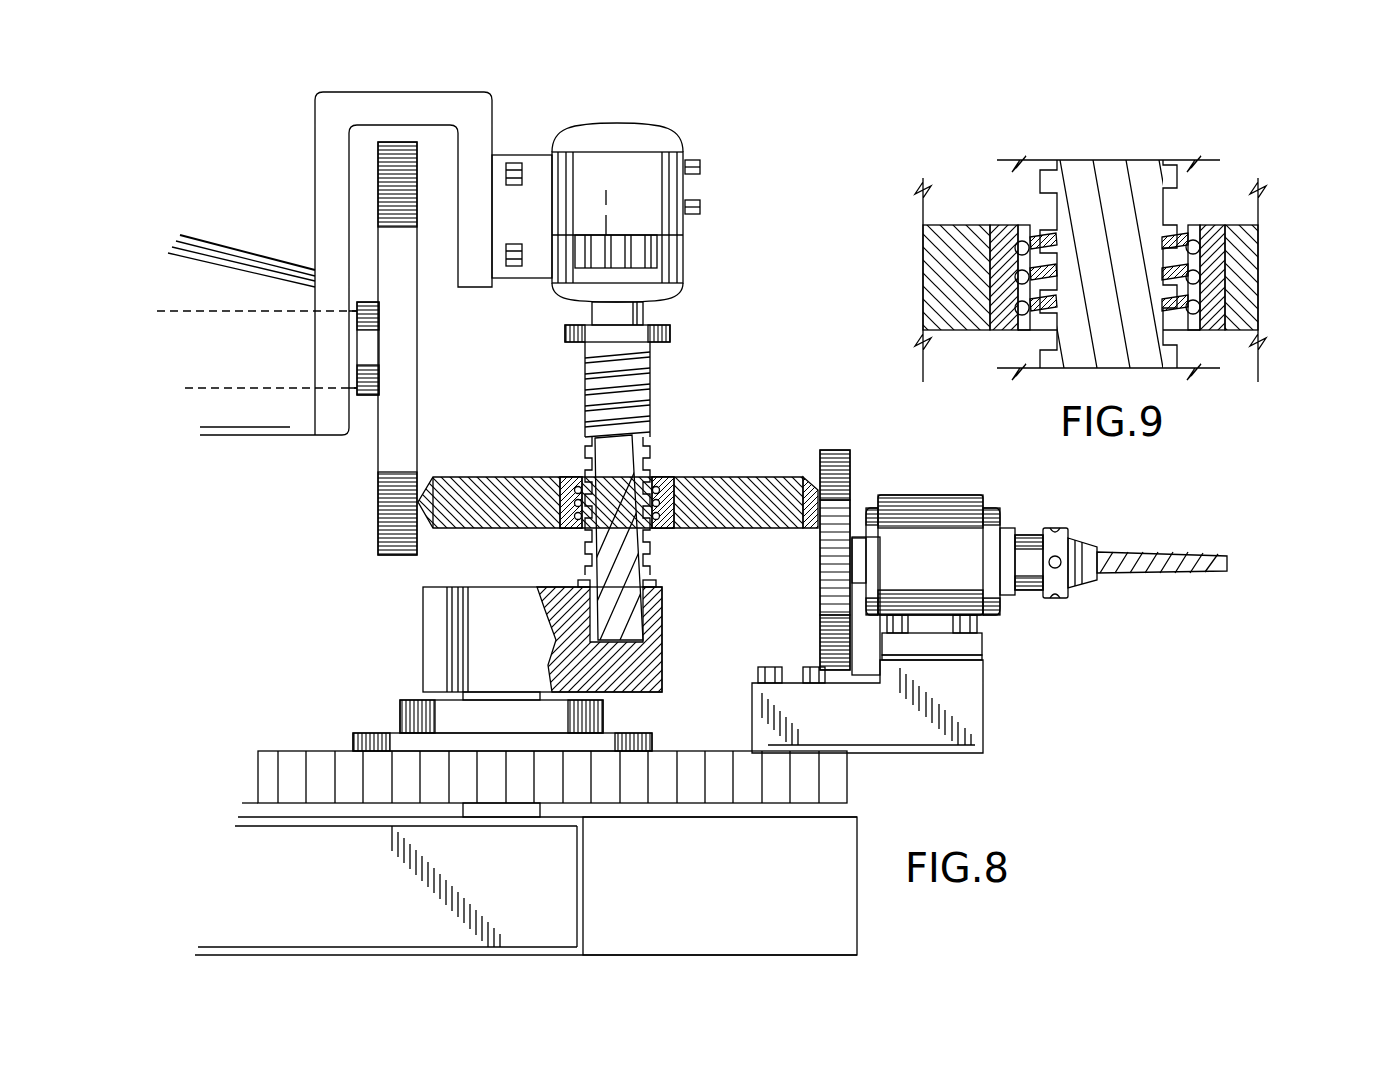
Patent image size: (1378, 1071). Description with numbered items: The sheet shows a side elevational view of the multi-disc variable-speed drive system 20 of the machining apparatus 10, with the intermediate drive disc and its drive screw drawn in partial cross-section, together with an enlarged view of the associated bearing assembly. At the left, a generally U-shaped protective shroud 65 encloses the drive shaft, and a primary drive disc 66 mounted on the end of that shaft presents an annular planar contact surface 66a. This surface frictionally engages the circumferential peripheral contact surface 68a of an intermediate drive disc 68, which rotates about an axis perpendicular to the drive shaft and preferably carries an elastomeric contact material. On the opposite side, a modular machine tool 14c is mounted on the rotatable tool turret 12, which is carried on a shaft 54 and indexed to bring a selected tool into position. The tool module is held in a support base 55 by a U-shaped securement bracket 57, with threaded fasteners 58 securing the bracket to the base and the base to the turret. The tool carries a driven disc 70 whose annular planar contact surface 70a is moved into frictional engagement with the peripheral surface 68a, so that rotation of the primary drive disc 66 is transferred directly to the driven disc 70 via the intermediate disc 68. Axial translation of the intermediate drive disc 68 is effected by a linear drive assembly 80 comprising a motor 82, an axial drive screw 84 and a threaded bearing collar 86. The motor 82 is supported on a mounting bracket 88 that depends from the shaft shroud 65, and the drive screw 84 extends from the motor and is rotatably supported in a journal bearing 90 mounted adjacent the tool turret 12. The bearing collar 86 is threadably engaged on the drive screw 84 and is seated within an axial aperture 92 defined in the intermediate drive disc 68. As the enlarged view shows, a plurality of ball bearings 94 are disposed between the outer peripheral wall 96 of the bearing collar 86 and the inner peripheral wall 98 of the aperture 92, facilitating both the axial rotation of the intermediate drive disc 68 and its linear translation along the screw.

In FIG. 8, the machining apparatus 10 is at (298, 164).
In FIG. 8, the tool turret 12 is at (850, 780).
In FIG. 8, the modular machine tool 14c is at (1170, 553).
In FIG. 8, the multi-disc variable-speed drive system 20 is at (410, 580).
In FIG. 8, the shaft 54 is at (470, 812).
In FIG. 8, the support base 55 is at (985, 732).
In FIG. 8, the U-shaped securement bracket 57 is at (925, 495).
In FIG. 8, the threaded fasteners 58 is at (920, 633).
In FIG. 8, the protective shroud 65 is at (205, 238).
In FIG. 8, the primary drive disc 66 is at (388, 450).
In FIG. 8, the annular planar contact surface 66a is at (418, 440).
In FIG. 8, the intermediate drive disc 68 is at (700, 477).
In FIG. 9, the intermediate drive disc 68 is at (1258, 302).
In FIG. 8, the circumferential peripheral contact surface 68a is at (812, 476).
In FIG. 8, the driven disc 70 is at (836, 500).
In FIG. 8, the annular planar contact surface 70a is at (818, 583).
In FIG. 8, the linear drive assembly 80 is at (695, 247).
In FIG. 8, the motor 82 is at (625, 122).
In FIG. 8, the axial drive screw 84 is at (652, 383).
In FIG. 9, the axial drive screw 84 is at (1160, 185).
In FIG. 8, the threaded bearing collar 86 is at (578, 529).
In FIG. 9, the threaded bearing collar 86 is at (1035, 225).
In FIG. 8, the mounting bracket 88 is at (495, 141).
In FIG. 8, the journal bearing 90 is at (652, 682).
In FIG. 9, the axial aperture 92 is at (1195, 330).
In FIG. 9, the ball bearings 94 is at (1245, 258).
In FIG. 9, the outer peripheral wall 96 is at (1198, 225).
In FIG. 9, the inner peripheral wall 98 is at (1240, 222).